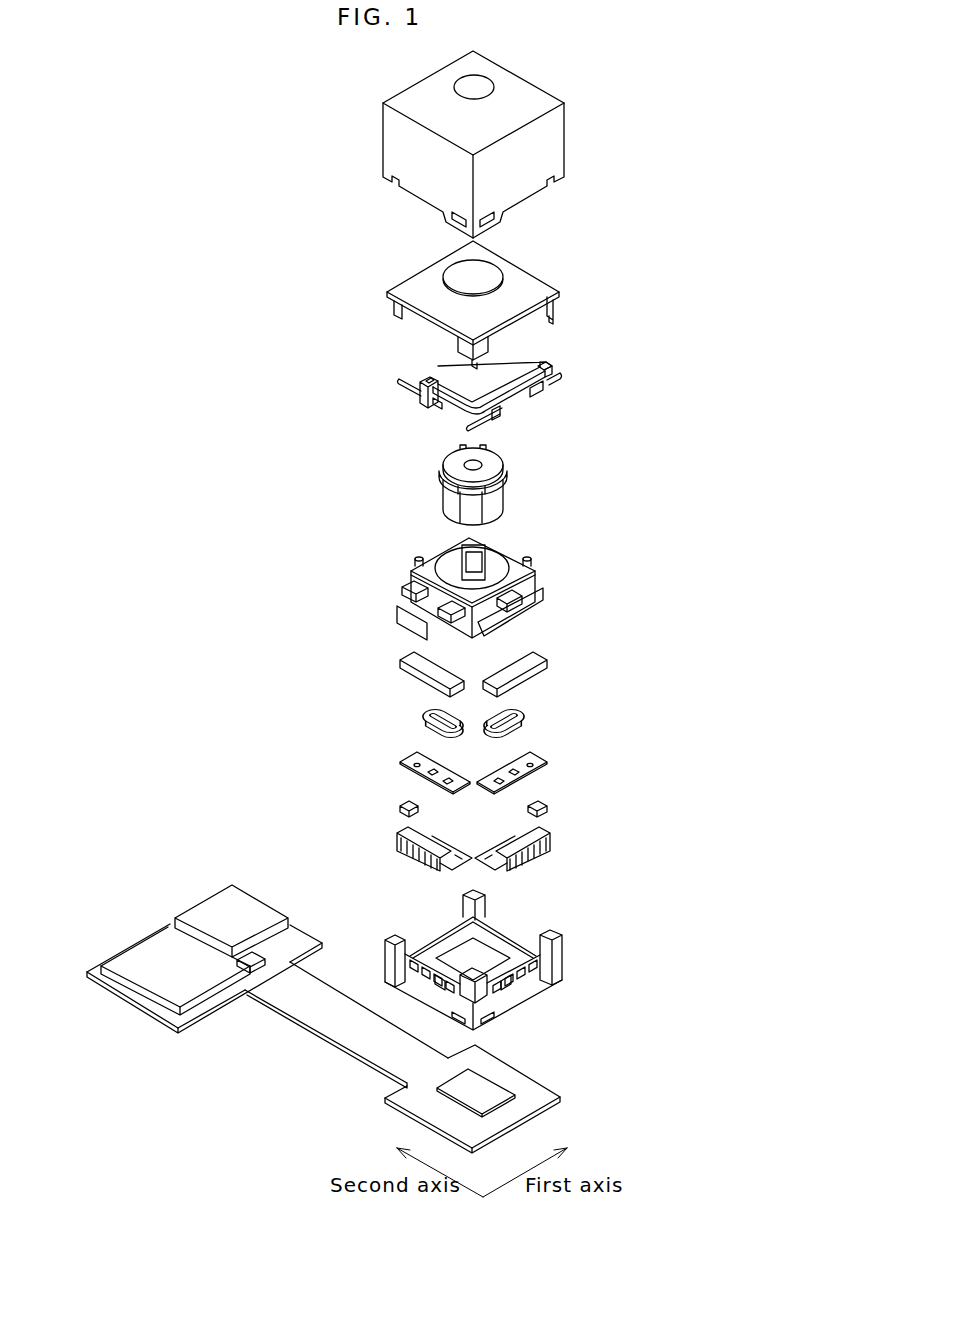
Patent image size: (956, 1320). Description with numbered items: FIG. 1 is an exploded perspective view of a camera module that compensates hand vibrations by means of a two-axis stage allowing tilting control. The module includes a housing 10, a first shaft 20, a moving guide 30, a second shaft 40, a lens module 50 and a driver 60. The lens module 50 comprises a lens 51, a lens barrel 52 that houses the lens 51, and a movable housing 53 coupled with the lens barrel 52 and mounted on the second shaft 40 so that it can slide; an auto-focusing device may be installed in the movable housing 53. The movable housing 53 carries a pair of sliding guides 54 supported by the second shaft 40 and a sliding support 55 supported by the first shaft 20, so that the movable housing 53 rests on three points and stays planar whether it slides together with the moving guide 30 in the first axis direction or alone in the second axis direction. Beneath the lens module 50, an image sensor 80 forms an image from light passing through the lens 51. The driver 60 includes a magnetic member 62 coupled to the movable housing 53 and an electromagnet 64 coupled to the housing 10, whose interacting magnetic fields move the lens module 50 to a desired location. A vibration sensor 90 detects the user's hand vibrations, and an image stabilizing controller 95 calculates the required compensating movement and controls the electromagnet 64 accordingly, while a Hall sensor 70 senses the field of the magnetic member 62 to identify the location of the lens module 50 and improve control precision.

The housing 10 is at (558, 950).
The first shaft 20 is at (525, 395).
The moving guide 30 is at (545, 375).
The second shaft 40 is at (398, 386).
The lens module 50 is at (441, 554).
The lens 51 is at (467, 463).
The lens barrel 52 is at (440, 506).
The movable housing 53 is at (442, 592).
The sliding guide 54 is at (463, 617).
The sliding support 55 is at (520, 593).
The driver 60 is at (528, 696).
The magnetic member 62 is at (548, 668).
The electromagnet 64 is at (532, 712).
The Hall sensor 70 is at (548, 805).
The image sensor 80 is at (483, 1088).
The vibration sensor 90 is at (215, 910).
The image stabilizing controller 95 is at (145, 957).